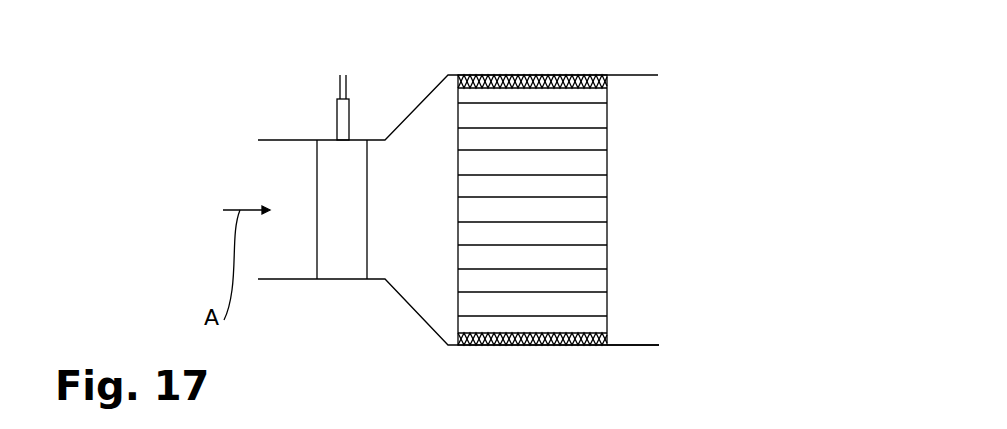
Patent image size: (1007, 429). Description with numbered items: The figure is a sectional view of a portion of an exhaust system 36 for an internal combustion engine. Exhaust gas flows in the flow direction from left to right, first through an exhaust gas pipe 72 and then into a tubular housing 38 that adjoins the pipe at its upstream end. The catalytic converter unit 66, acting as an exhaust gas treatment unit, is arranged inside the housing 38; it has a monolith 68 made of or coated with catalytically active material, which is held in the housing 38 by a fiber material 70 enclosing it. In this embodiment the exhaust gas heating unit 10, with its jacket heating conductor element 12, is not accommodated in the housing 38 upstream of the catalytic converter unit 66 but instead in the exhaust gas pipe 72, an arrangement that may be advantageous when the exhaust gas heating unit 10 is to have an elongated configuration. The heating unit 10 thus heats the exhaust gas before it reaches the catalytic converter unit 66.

The exhaust gas heating unit 10 is at (312, 254).
The jacket heating conductor element 12 is at (337, 122).
The exhaust system 36 is at (722, 135).
The housing 38 is at (638, 345).
The catalytic converter unit 66 is at (620, 143).
The monolith 68 is at (585, 187).
The mounting mat 70 is at (552, 338).
The exhaust gas pipe 72 is at (302, 279).